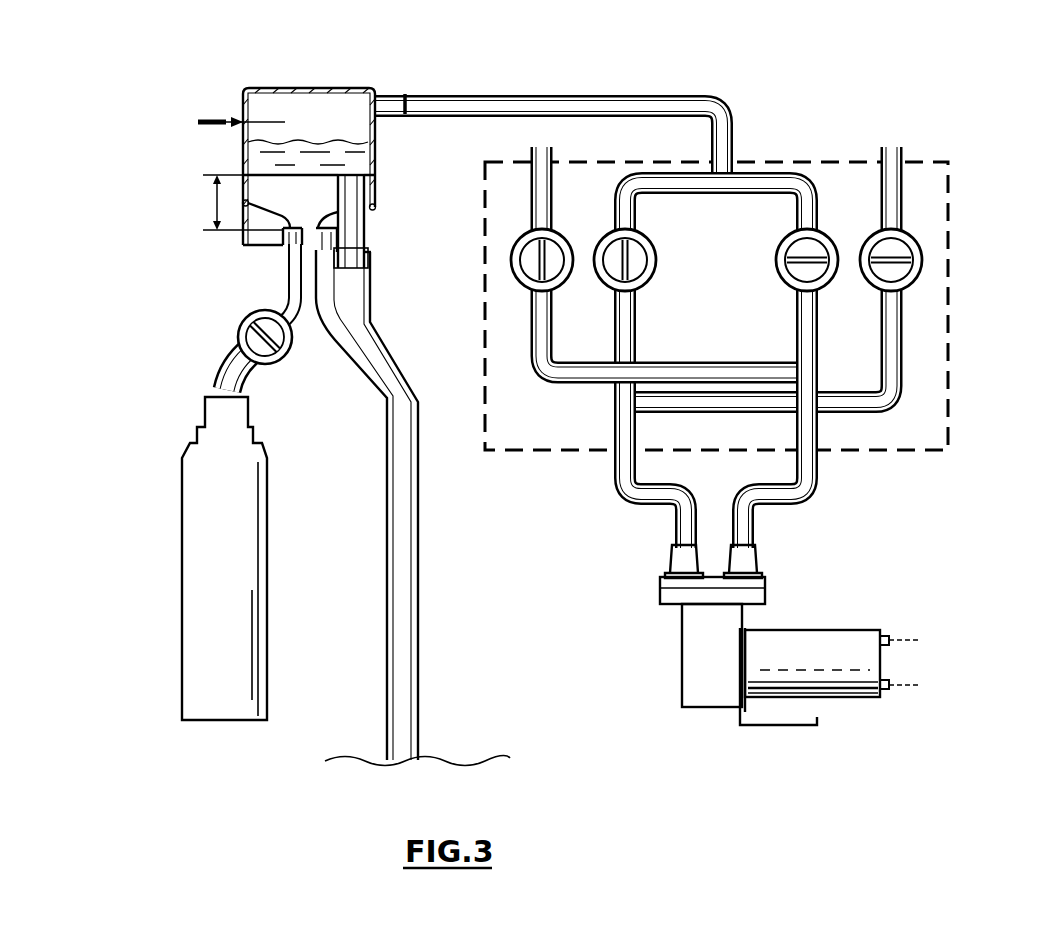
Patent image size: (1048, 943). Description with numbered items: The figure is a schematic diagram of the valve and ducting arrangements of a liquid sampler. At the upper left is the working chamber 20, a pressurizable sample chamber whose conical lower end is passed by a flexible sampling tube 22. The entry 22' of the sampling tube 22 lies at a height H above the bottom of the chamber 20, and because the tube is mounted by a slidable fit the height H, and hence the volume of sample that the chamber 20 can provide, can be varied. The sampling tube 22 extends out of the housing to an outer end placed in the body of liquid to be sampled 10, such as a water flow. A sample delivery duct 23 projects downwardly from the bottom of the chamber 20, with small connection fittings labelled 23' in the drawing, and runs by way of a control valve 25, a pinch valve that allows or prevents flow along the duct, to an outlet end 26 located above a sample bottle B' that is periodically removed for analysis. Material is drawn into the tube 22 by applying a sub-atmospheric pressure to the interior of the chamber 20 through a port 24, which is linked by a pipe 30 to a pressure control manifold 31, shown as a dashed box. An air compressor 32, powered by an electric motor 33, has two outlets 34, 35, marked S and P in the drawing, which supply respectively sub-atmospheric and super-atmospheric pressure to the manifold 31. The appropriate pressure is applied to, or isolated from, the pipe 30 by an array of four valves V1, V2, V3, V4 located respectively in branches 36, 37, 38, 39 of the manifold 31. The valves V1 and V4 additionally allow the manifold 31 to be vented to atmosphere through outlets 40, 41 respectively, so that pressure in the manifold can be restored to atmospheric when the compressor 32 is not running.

The body of liquid to be sampled 10 is at (442, 762).
The working chamber 20 is at (333, 88).
The sampling tube 22 is at (377, 467).
The entry of the sampling tube 22' is at (380, 162).
The sample delivery duct 23 is at (246, 283).
The outlet nozzles 23' is at (287, 242).
The port 24 is at (381, 115).
The control valve 25 is at (240, 333).
The outlet end 26 is at (213, 386).
The pipe 30 is at (530, 98).
The pressure control manifold 31 is at (950, 283).
The air compressor 32 is at (694, 668).
The electric motor 33 is at (783, 633).
The outlet 34 is at (676, 556).
The outlet 35 is at (751, 556).
The branch 36 is at (529, 332).
The branch 37 is at (615, 340).
The branch 38 is at (816, 347).
The branch 39 is at (904, 345).
The outlet 40 is at (533, 148).
The outlet 41 is at (893, 148).
The height H is at (217, 203).
The sample bottle B' is at (194, 558).
The suction port S is at (657, 519).
The pressure port P is at (763, 519).
The valve V1 is at (518, 243).
The valve V2 is at (650, 246).
The valve V3 is at (780, 275).
The valve V4 is at (913, 242).